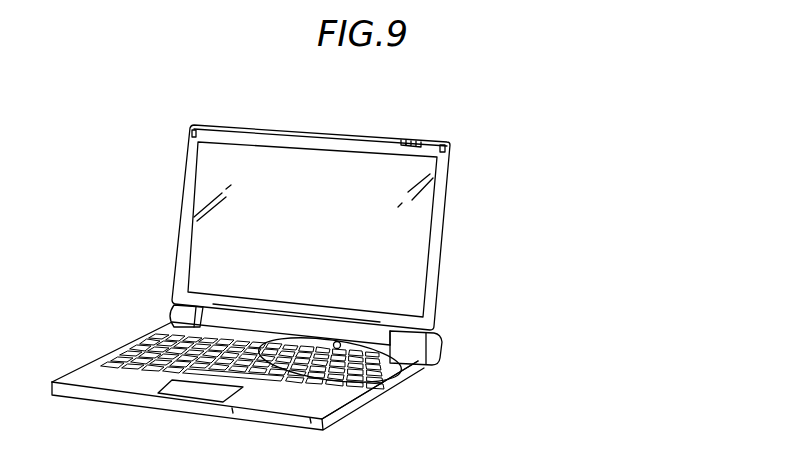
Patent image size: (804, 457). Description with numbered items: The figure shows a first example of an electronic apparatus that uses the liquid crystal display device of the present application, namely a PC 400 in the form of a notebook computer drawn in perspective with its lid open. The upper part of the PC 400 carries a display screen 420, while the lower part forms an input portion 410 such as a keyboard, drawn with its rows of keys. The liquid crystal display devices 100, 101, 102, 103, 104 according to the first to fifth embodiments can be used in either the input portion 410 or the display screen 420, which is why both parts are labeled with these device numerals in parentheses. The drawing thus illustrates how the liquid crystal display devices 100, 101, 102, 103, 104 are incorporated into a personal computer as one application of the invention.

The PC 400 is at (530, 183).
The display screen 420 is at (302, 230).
The input portion 410 is at (420, 367).
The liquid crystal display device 100 is at (396, 277).
The liquid crystal display device 101 is at (396, 277).
The liquid crystal display device 102 is at (396, 277).
The liquid crystal display device 103 is at (396, 277).
The liquid crystal display device 104 is at (396, 277).